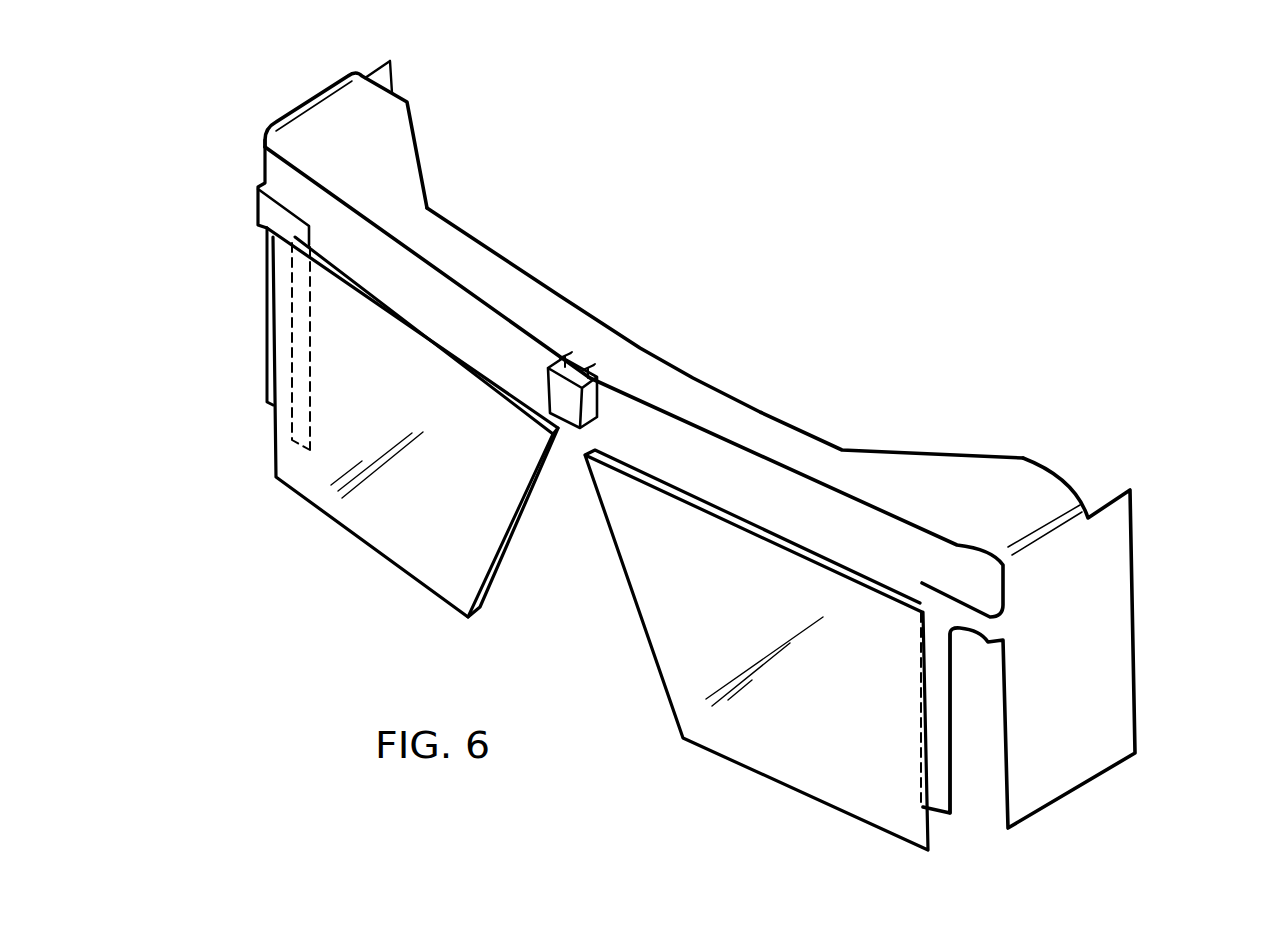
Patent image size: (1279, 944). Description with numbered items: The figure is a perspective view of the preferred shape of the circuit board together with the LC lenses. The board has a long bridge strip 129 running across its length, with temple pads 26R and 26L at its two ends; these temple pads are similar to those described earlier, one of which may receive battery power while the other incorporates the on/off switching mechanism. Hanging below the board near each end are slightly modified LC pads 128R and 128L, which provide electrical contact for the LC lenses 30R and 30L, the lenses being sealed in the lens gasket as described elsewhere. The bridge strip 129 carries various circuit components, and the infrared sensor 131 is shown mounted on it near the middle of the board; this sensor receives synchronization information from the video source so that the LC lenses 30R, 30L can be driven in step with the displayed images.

The temple pad 26R is at (392, 73).
The temple pad 26L is at (1107, 627).
The LC lens 30R is at (392, 537).
The LC lens 30L is at (765, 762).
The LC pad 128R is at (292, 418).
The LC pad 128L is at (945, 792).
The bridge strip 129 is at (795, 448).
The infrared sensor 131 is at (593, 382).